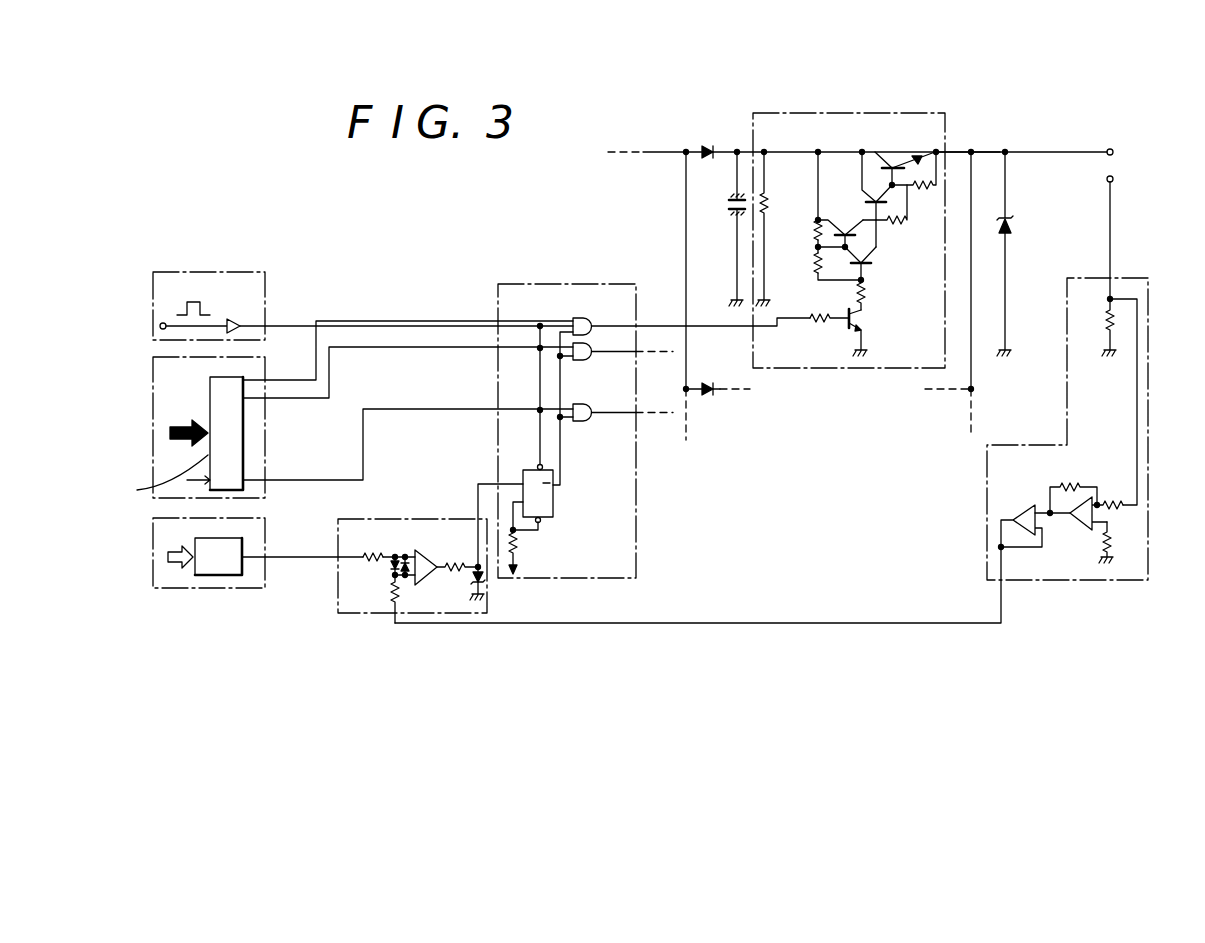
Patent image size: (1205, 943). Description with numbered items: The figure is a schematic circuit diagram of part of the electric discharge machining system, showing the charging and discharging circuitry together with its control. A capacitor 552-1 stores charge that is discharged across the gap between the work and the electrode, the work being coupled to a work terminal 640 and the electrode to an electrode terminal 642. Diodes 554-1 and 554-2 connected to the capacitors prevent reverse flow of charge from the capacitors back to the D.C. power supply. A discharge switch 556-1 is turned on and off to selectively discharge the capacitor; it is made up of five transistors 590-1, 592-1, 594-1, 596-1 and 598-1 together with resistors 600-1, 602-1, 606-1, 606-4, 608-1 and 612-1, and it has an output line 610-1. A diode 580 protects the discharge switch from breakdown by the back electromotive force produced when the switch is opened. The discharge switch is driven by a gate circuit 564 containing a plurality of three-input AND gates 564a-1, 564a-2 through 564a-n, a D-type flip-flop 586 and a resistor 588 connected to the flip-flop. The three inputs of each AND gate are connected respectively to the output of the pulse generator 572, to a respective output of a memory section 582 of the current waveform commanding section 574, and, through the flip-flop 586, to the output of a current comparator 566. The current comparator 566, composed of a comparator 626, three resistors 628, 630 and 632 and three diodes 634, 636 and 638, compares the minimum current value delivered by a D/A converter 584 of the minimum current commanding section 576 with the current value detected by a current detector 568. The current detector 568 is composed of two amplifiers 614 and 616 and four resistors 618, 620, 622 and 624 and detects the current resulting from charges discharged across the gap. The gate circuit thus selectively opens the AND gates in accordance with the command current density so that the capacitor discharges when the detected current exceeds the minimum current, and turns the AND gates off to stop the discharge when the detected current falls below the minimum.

The capacitor 552-1 is at (727, 203).
The diode 554-1 is at (707, 145).
The diode 554-2 is at (707, 400).
The discharge switch 556-1 is at (860, 112).
The gate circuit 564 is at (638, 523).
The three-input AND gate 564a-1 is at (590, 307).
The three-input AND gate 564a-2 is at (588, 362).
The three-input AND gate 564a-n is at (588, 422).
The current comparator 566 is at (353, 615).
The current detector 568 is at (1170, 357).
The pulse generator 572 is at (153, 285).
The current waveform commanding section 574 is at (152, 397).
The minimum current commanding section 576 is at (153, 543).
The diode 580 is at (1012, 226).
The memory section 582 is at (245, 442).
The D/A converter 584 is at (227, 575).
The D-type flip-flop 586 is at (553, 508).
The resistor 588 is at (518, 548).
The transistor 590-1 is at (862, 325).
The transistor 592-1 is at (863, 255).
The transistor 594-1 is at (845, 227).
The transistor 596-1 is at (875, 200).
The transistor 598-1 is at (890, 166).
The resistor 600-1 is at (820, 322).
The resistor 602-1 is at (864, 292).
The resistor 606-1 is at (817, 240).
The resistor 606-4 is at (817, 265).
The resistor 608-1 is at (892, 222).
The output line 610-1 is at (948, 156).
The resistor 612-1 is at (770, 197).
The amplifier 614 is at (1085, 526).
The amplifier 616 is at (1032, 505).
The resistor 618 is at (1105, 322).
The resistor 620 is at (1113, 503).
The resistor 622 is at (1112, 540).
The resistor 624 is at (1069, 486).
The comparator 626 is at (418, 550).
The resistor 628 is at (367, 555).
The resistor 630 is at (390, 585).
The resistor 632 is at (455, 565).
The diode 634 is at (395, 565).
The diode 636 is at (405, 555).
The diode 638 is at (475, 582).
The work terminal 640 is at (1113, 150).
The electrode terminal 642 is at (1112, 182).